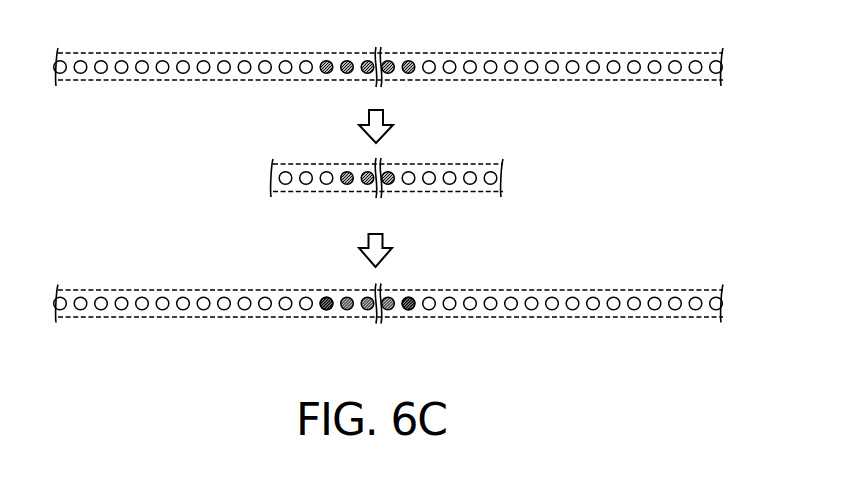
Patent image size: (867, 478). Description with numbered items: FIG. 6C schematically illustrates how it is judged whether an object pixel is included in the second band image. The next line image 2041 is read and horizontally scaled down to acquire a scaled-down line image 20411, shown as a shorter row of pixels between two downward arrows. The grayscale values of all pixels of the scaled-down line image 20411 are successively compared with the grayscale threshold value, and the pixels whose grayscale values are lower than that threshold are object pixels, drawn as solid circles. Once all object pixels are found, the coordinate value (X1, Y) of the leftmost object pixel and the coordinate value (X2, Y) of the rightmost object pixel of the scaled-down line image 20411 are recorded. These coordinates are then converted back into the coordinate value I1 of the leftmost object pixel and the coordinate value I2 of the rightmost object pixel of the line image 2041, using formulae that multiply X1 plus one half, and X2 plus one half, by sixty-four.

The line image 2041 is at (597, 53).
The scaled-down line image 20411 is at (468, 164).
The coordinate value of the leftmost object pixel X1 is at (345, 183).
The coordinate value of the rightmost object pixel X2 is at (391, 183).
The coordinate value of the leftmost object pixel of the line image I1 is at (326, 310).
The coordinate value of the rightmost object pixel of the line image I2 is at (410, 310).